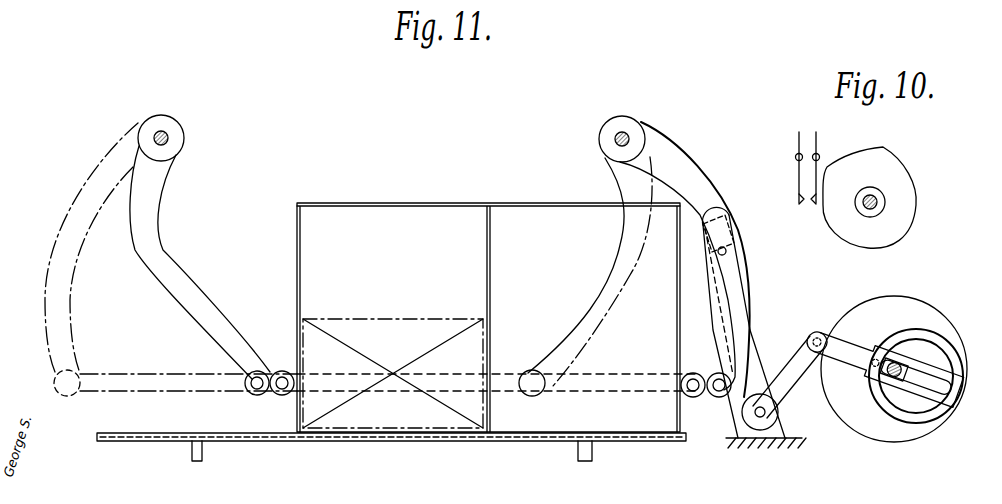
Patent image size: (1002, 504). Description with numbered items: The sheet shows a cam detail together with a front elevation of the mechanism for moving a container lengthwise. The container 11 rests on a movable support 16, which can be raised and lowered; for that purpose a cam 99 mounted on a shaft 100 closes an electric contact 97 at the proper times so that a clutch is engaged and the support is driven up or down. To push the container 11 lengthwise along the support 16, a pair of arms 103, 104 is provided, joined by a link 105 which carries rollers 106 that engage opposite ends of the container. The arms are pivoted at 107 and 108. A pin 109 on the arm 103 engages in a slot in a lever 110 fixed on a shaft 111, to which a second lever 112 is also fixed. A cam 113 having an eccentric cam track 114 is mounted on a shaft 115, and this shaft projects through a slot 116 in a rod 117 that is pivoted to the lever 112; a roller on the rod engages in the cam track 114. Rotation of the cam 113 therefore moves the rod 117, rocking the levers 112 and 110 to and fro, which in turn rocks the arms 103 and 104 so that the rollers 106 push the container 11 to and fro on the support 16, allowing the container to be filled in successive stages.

In FIG. 11, the container 11 is at (355, 213).
In FIG. 11, the movable support 16 is at (192, 457).
In FIG. 10, the electric contact 97 is at (797, 174).
In FIG. 10, the cam 99 is at (893, 177).
In FIG. 10, the shaft 100 is at (883, 202).
In FIG. 11, the arm 103 is at (662, 152).
In FIG. 11, the arm 104 is at (147, 203).
In FIG. 11, the link 105 is at (503, 372).
In FIG. 11, the rollers 106 is at (282, 371).
In FIG. 11, the pivot 107 is at (625, 130).
In FIG. 11, the pivot 108 is at (165, 133).
In FIG. 11, the pin 109 is at (725, 247).
In FIG. 11, the lever 110 is at (748, 313).
In FIG. 11, the shaft 111 is at (765, 412).
In FIG. 11, the lever 112 is at (791, 357).
In FIG. 11, the cam 113 is at (912, 308).
In FIG. 11, the eccentric cam track 114 is at (942, 340).
In FIG. 11, the shaft 115 is at (890, 352).
In FIG. 11, the slot 116 is at (900, 380).
In FIG. 11, the rod 117 is at (840, 350).